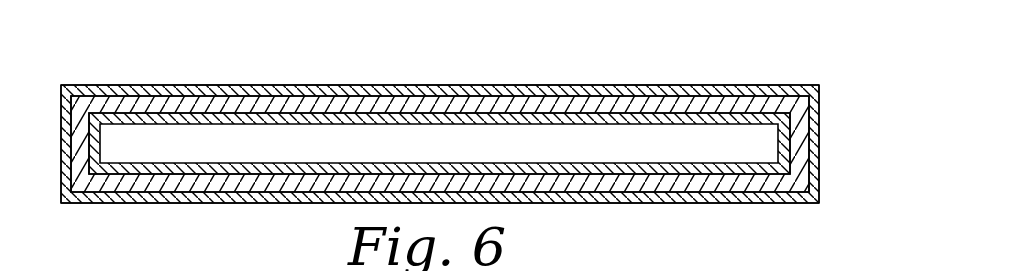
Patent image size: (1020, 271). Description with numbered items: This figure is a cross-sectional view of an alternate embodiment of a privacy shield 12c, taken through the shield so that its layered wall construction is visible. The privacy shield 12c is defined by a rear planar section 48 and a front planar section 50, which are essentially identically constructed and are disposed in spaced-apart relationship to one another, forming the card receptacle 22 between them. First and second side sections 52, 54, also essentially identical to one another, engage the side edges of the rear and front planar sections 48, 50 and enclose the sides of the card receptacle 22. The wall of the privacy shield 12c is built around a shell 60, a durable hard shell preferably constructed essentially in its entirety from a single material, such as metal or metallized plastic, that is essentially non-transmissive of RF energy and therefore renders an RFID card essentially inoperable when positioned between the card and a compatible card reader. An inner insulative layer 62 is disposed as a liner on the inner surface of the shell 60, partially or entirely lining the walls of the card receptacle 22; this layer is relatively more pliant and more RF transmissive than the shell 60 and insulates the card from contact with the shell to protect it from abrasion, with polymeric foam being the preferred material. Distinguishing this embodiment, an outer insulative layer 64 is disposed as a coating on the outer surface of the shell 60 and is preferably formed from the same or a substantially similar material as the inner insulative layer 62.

The privacy shield 12c is at (466, 133).
The card receptacle 22 is at (703, 160).
The rear planar section 48 is at (592, 85).
The front planar section 50 is at (563, 203).
The first side section 52 is at (61, 116).
The second side section 54 is at (819, 147).
The shell 60 is at (225, 102).
The inner insulative layer 62 is at (487, 120).
The outer insulative layer 64 is at (95, 85).